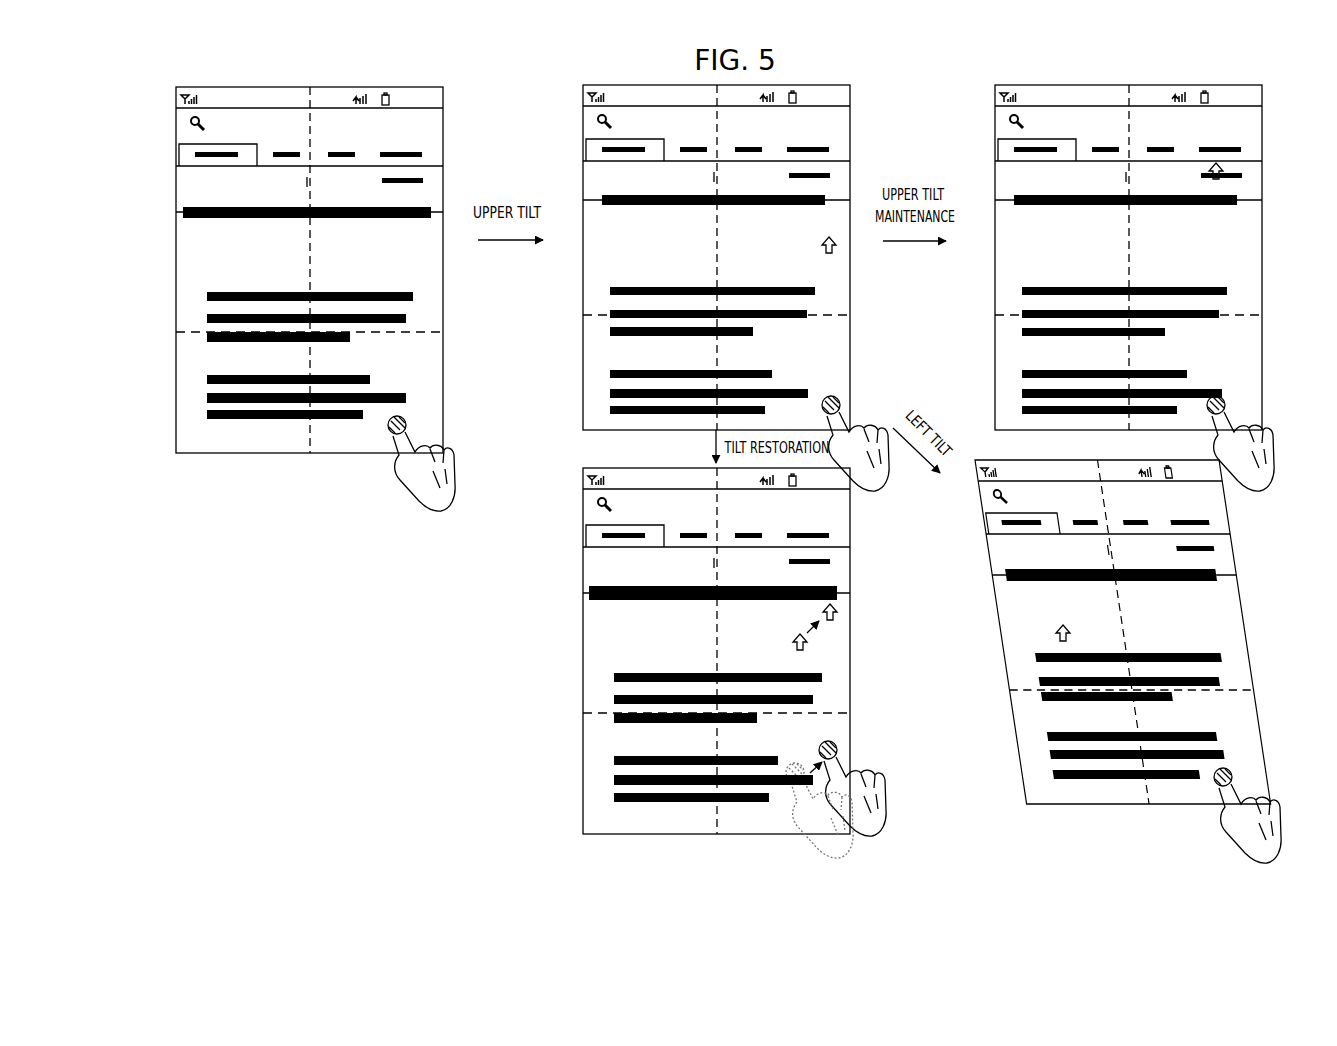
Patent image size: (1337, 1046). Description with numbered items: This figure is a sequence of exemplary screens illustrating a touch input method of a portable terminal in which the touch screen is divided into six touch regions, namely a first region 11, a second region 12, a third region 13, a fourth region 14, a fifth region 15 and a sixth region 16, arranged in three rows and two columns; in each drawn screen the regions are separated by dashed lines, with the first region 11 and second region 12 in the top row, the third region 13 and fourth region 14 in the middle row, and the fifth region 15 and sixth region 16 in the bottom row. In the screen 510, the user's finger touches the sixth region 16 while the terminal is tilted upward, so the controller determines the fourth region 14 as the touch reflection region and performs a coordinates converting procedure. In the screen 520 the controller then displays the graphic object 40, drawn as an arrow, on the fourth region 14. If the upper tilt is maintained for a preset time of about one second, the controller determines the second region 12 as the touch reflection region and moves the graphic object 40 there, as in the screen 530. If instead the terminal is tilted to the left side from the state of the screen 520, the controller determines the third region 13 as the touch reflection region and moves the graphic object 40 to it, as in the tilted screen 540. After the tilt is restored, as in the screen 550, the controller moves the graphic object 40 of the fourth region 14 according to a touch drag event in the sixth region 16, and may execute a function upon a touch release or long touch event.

The first region 11 is at (176, 181).
The second region 12 is at (444, 181).
The third region 13 is at (176, 266).
The fourth region 14 is at (444, 298).
The fifth region 15 is at (176, 376).
The sixth region 16 is at (444, 377).
The graphic object 40 is at (837, 246).
The screen 510 is at (168, 116).
The screen 520 is at (576, 114).
The screen 530 is at (988, 120).
The screen 540 is at (982, 542).
The screen 550 is at (576, 500).